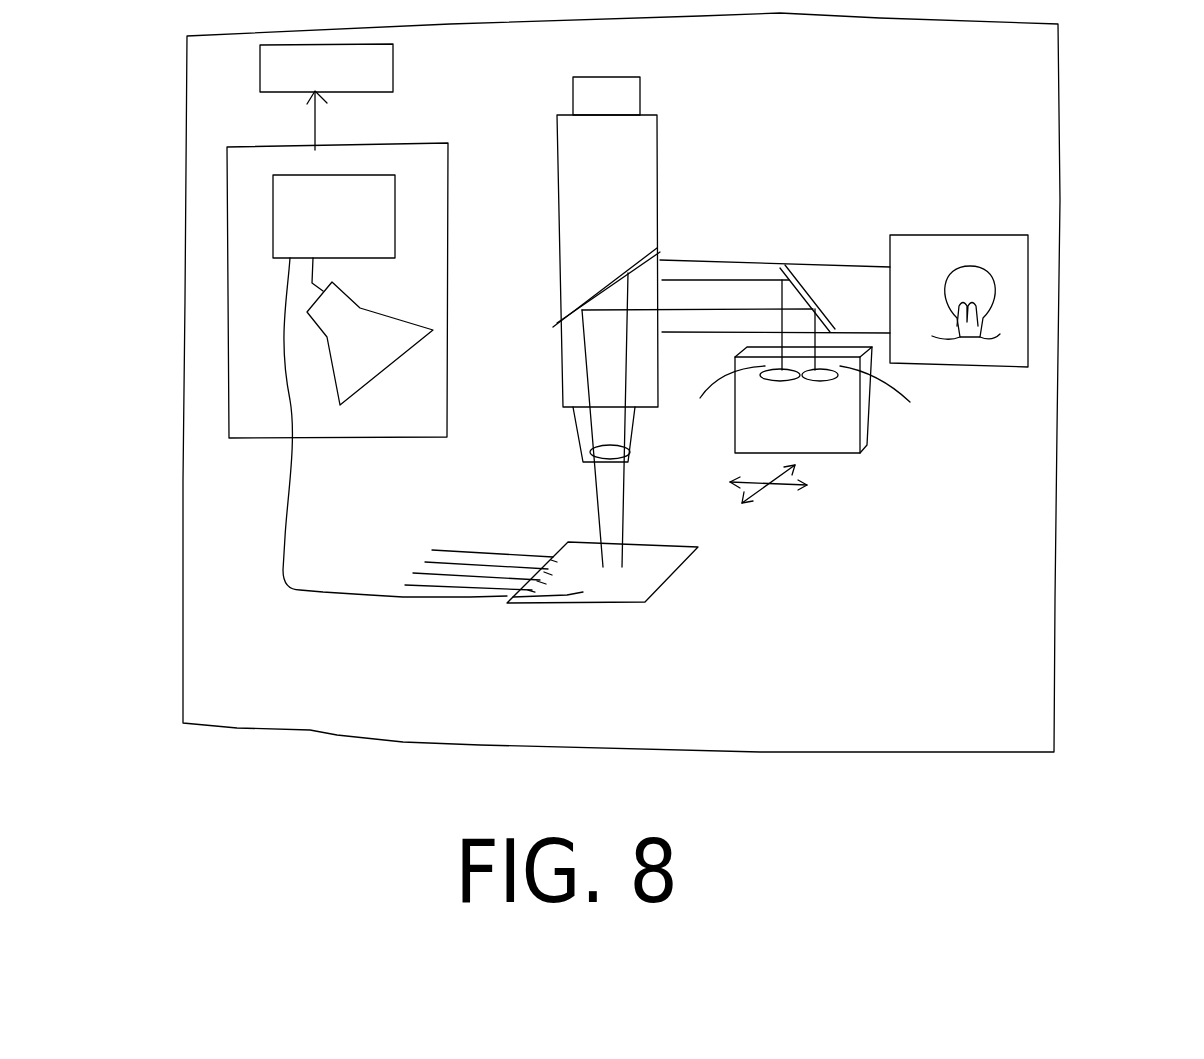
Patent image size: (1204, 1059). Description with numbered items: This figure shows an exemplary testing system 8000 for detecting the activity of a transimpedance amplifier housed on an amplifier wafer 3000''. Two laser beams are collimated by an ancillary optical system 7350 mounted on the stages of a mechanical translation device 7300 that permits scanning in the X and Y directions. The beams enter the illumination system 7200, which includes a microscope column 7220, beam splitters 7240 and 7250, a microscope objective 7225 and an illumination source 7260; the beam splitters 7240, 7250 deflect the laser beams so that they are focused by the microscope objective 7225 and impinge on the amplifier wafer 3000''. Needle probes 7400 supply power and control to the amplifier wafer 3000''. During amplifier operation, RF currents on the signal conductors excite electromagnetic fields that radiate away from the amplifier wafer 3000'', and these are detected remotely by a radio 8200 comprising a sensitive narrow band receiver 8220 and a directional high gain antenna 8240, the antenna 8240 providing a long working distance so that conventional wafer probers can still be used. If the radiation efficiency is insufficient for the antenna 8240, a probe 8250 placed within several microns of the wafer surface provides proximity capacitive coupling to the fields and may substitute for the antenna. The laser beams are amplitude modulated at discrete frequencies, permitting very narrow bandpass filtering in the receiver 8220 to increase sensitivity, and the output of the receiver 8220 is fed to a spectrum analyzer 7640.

The testing system 8000 is at (1017, 670).
The spectrum analyzer 7640 is at (385, 58).
The radio 8200 is at (430, 175).
The receiver 8220 is at (383, 205).
The directional high gain antenna 8240 is at (362, 322).
The probe 8250 is at (322, 593).
The illumination system 7200 is at (698, 197).
The microscope column 7220 is at (642, 132).
The microscope objective 7225 is at (592, 453).
The beam splitter 7250 is at (572, 296).
The beam splitter 7240 is at (813, 251).
The illumination source 7260 is at (948, 250).
The mechanical translation device 7300 is at (828, 442).
The ancillary optical system 7350 is at (775, 382).
The needle probes 7400 is at (455, 550).
The amplifier wafer 3000'' is at (633, 572).